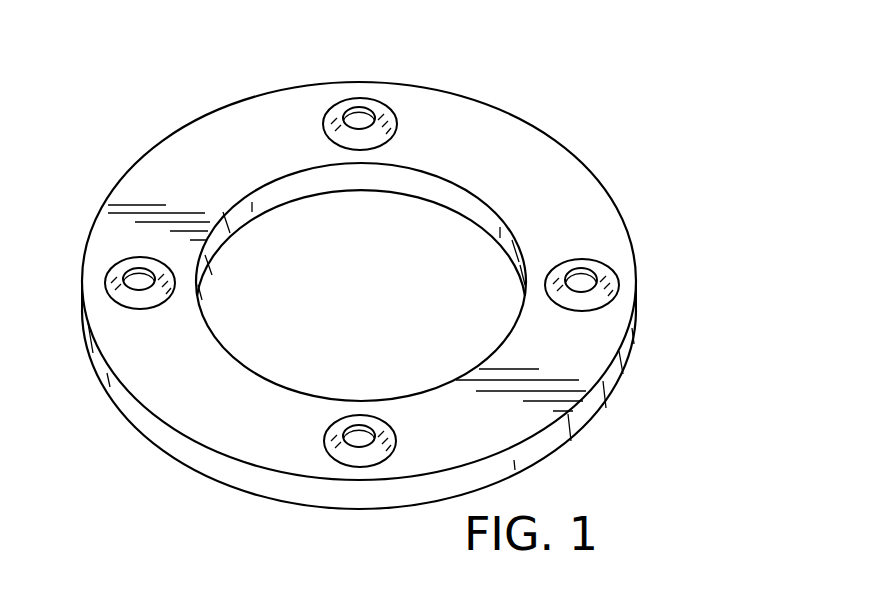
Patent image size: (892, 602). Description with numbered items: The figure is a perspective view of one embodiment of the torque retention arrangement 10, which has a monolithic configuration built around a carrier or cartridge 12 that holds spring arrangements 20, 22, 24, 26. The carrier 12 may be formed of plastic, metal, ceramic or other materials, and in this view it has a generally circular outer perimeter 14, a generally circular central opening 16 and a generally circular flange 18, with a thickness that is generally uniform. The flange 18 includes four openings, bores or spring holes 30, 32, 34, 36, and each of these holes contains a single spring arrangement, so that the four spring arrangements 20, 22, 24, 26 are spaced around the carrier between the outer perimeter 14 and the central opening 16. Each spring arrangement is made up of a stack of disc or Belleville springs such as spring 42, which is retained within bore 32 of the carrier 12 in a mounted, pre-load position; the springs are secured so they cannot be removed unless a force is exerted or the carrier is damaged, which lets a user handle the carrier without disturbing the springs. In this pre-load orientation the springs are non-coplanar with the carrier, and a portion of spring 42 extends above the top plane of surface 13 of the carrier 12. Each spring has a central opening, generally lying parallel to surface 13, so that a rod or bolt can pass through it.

The torque retention arrangement 10 is at (398, 287).
The carrier or cartridge 12 is at (212, 115).
The surface 13 is at (562, 198).
The outer perimeter 14 is at (635, 240).
The central opening 16 is at (457, 203).
The flange 18 is at (583, 418).
The spring arrangement 20 is at (409, 84).
The spring arrangement 22 is at (639, 315).
The spring arrangement 24 is at (318, 485).
The spring arrangement 26 is at (106, 294).
The spring hole 30 is at (397, 127).
The bore 32 is at (585, 312).
The spring hole 34 is at (375, 468).
The spring hole 36 is at (133, 307).
The spring 42 is at (601, 271).